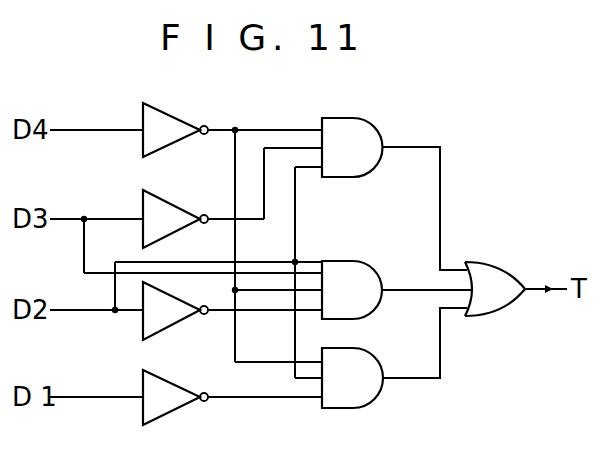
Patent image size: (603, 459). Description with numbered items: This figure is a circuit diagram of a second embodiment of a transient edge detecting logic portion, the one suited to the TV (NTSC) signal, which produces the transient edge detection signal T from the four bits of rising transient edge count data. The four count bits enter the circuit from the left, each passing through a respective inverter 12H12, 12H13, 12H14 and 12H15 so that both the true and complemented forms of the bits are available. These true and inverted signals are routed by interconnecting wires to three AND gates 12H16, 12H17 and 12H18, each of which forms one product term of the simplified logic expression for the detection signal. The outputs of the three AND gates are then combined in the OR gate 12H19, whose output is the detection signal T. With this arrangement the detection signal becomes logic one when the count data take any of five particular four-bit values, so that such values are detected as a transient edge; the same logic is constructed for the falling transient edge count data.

The inverter 12H12 is at (161, 86).
The inverter 12H13 is at (164, 192).
The inverter 12H14 is at (189, 322).
The inverter 12H15 is at (195, 409).
The AND gate 12H16 is at (372, 178).
The AND gate 12H17 is at (380, 304).
The AND gate 12H18 is at (384, 392).
The OR gate 12H19 is at (517, 242).